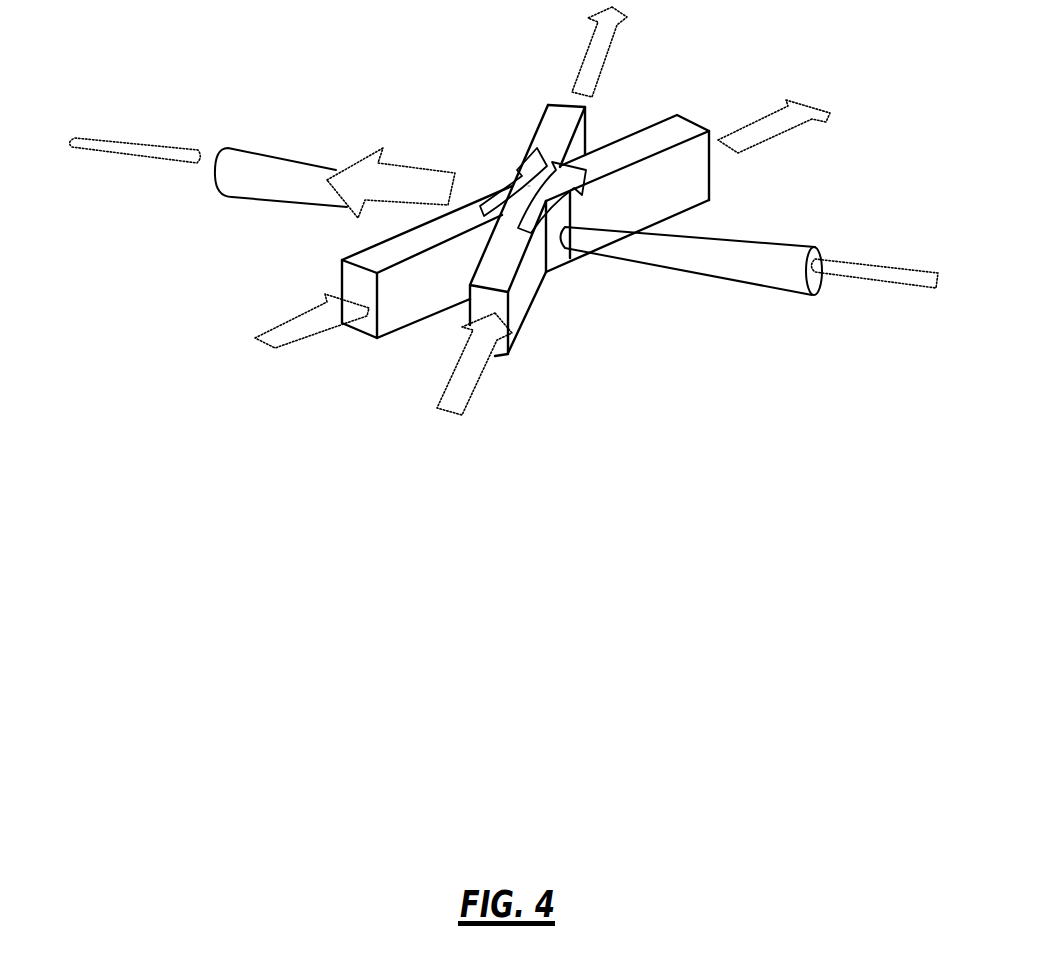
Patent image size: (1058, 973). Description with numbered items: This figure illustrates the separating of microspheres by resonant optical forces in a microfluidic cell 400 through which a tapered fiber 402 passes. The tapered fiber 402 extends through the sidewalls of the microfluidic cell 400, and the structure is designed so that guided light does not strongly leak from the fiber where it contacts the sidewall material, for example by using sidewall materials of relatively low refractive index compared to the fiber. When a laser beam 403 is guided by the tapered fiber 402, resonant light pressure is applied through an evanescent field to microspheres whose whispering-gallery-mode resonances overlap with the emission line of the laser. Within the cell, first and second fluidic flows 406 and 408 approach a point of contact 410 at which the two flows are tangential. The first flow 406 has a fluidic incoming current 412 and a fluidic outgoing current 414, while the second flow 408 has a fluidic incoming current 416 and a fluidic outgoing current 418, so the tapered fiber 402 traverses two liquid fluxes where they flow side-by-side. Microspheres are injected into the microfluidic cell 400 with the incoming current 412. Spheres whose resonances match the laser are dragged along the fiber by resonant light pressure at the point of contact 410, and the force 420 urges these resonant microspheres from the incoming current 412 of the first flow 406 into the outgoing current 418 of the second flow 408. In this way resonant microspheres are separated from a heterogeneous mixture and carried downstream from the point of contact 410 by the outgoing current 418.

The microfluidic cell 400 is at (513, 70).
The tapered fiber 402 is at (233, 162).
The laser beam 403 is at (107, 152).
The first fluidic flow 406 is at (574, 165).
The second fluidic flow 408 is at (512, 180).
The point of contact 410 is at (527, 186).
The fluidic incoming current 412 is at (462, 390).
The fluidic outgoing current 414 is at (765, 127).
The fluidic incoming current 416 is at (278, 327).
The fluidic outgoing current 418 is at (596, 62).
The force 420 is at (422, 185).